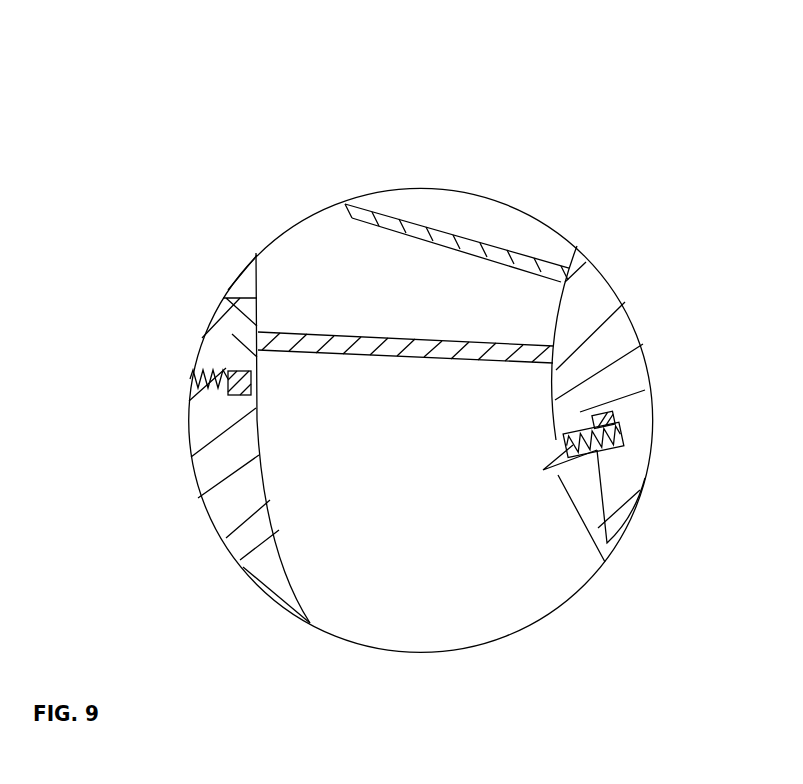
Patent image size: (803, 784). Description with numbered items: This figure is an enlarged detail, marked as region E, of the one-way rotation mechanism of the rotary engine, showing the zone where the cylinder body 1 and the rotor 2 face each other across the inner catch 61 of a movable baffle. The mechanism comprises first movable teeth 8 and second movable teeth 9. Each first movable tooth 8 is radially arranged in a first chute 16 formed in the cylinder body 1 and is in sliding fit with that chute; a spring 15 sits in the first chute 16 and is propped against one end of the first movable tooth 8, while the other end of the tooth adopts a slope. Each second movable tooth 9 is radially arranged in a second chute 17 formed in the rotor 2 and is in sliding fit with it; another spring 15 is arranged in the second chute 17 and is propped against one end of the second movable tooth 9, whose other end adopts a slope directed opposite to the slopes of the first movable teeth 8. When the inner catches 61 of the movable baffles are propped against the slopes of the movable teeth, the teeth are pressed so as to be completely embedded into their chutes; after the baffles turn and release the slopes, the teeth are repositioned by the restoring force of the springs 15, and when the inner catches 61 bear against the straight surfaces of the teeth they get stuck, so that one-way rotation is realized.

The detail region E is at (332, 170).
The cylinder body 1 is at (228, 481).
The rotor 2 is at (622, 488).
The first movable tooth 8 is at (258, 368).
The second movable tooth 9 is at (562, 470).
The spring 15 is at (190, 380).
The first chute 16 is at (232, 364).
The second chute 17 is at (592, 420).
The inner catch 61 is at (325, 335).